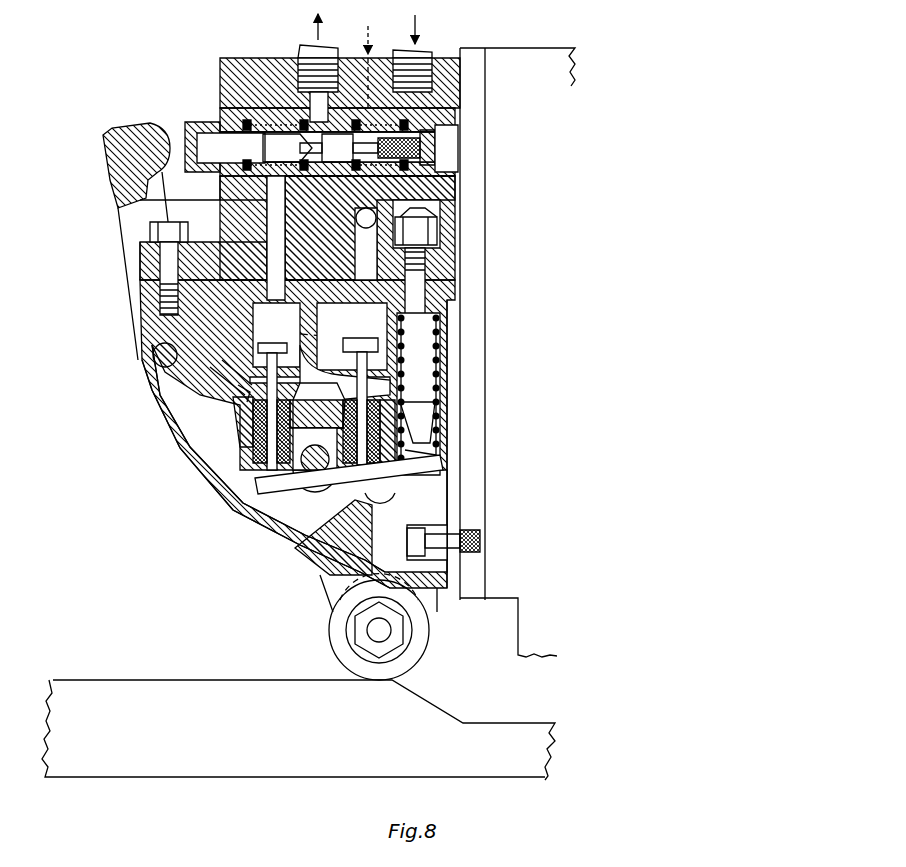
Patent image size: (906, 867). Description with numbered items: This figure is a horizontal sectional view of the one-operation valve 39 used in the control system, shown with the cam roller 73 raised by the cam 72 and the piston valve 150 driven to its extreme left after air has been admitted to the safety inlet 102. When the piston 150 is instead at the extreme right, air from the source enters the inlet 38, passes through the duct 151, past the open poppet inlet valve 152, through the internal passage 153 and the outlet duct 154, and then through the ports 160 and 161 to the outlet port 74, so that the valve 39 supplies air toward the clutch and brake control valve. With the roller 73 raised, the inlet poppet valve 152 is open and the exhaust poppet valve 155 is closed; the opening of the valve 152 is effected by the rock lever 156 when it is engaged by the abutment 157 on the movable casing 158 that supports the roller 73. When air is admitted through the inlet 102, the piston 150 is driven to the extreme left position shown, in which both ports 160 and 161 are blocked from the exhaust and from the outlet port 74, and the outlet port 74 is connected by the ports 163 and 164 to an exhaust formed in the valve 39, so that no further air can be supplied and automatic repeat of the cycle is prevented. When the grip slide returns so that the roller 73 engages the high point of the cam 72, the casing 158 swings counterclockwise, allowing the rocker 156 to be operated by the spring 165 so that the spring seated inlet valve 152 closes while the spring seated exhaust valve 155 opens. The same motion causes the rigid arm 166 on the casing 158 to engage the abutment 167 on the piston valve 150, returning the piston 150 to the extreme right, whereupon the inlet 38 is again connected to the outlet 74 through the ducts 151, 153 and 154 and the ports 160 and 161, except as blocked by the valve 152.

The inlet 38 is at (382, 40).
The valve 39 is at (218, 90).
The cam 72 is at (211, 680).
The cam roller 73 is at (420, 655).
The outlet port 74 is at (302, 50).
The inlet 102 is at (420, 52).
The piston valve 150 is at (440, 176).
The duct 151 is at (367, 262).
The poppet inlet valve 152 is at (362, 340).
The internal passage 153 is at (318, 353).
The outlet duct 154 is at (267, 208).
The exhaust poppet valve 155 is at (226, 379).
The rock lever 156 is at (377, 485).
The abutment 157 is at (370, 523).
The movable casing 158 is at (228, 497).
The port 160 is at (262, 158).
The port 161 is at (292, 145).
The port 163 is at (349, 147).
The port 164 is at (403, 148).
The spring 165 is at (435, 430).
The rigid arm 166 is at (118, 164).
The abutment 167 is at (190, 128).